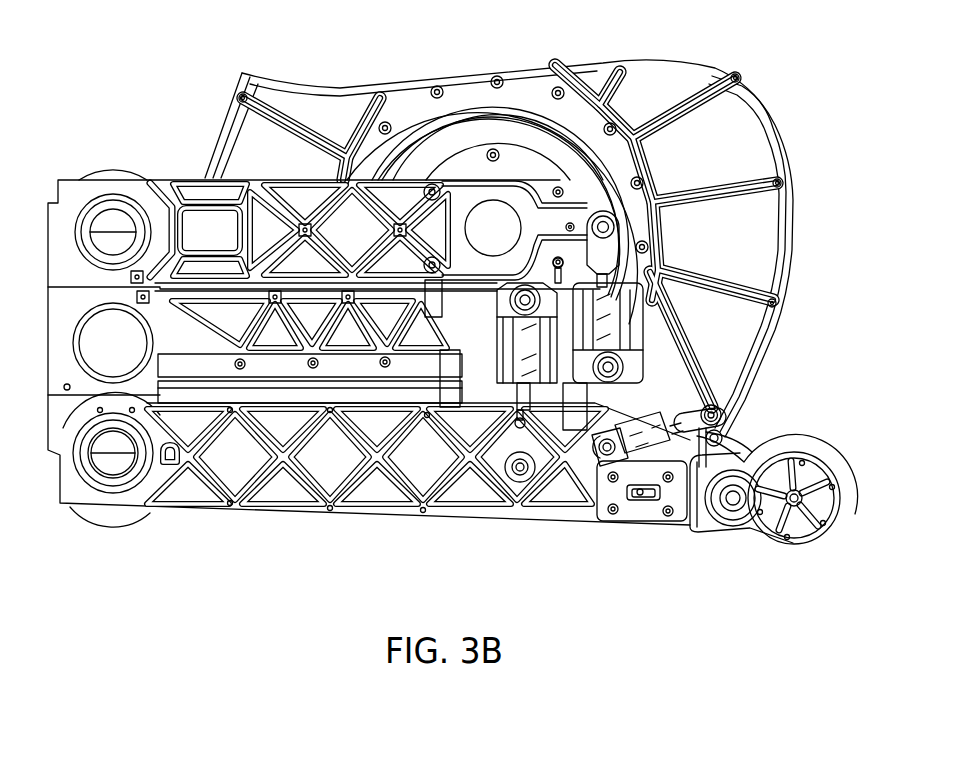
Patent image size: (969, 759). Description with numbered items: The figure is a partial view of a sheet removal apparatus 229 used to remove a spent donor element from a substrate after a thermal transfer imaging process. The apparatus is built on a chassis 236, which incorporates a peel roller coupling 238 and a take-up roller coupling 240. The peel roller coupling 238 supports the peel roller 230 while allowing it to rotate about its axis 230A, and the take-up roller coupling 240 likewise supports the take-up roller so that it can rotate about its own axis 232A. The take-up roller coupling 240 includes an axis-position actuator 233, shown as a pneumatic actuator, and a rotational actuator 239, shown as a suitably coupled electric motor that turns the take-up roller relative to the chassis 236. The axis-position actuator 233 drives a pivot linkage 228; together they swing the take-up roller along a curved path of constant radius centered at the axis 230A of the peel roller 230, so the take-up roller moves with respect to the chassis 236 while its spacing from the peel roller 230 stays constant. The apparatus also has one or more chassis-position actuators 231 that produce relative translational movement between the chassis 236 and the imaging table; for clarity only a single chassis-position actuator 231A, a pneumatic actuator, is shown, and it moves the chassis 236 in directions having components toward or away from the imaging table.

The pivot linkage 228 is at (718, 435).
The sheet removal apparatus 229 is at (646, 551).
The peel roller 230 is at (733, 508).
The axis of peel roller 230A is at (730, 520).
The chassis-position actuators 231 is at (518, 432).
The chassis-position actuator 231A is at (503, 481).
The axis of take-up roller 232A is at (796, 490).
The take-up roller axis-position actuator 233 is at (668, 420).
The chassis 236 is at (698, 518).
The peel roller coupling 238 is at (743, 531).
The take-up roller rotational actuator 239 is at (807, 522).
The take-up roller coupling 240 is at (810, 533).